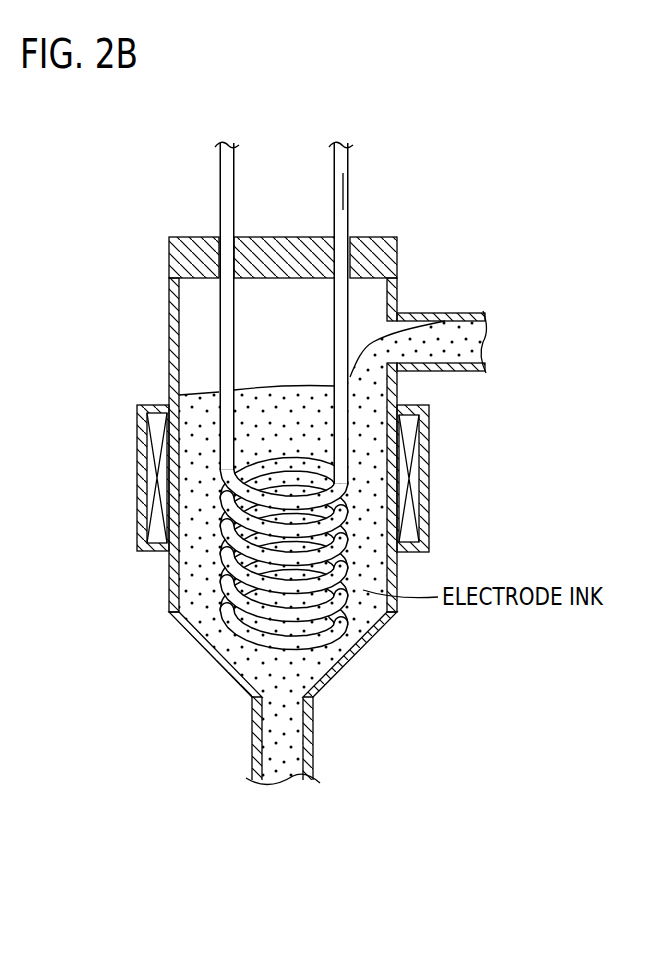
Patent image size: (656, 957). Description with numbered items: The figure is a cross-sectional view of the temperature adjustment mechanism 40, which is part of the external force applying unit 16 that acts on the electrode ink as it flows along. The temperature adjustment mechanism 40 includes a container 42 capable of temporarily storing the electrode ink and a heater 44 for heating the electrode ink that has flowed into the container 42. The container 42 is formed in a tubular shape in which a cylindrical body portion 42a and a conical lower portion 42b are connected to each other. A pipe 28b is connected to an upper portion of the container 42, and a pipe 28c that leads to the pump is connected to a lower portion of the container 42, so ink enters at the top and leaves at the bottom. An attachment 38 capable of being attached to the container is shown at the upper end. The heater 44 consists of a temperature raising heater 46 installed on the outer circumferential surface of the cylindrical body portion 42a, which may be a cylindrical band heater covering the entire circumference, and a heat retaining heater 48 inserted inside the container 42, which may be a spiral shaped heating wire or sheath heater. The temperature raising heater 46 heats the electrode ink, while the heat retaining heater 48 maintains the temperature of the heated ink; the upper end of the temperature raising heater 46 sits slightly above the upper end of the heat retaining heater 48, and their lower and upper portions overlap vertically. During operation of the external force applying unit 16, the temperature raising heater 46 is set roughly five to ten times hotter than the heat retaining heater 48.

The temperature adjustment mechanism 40 is at (101, 145).
The external force applying unit 16 is at (135, 145).
The attachment 38 is at (382, 246).
The pipe 28b is at (430, 315).
The pipe 28c is at (314, 743).
The container 42 is at (88, 575).
The cylindrical body portion 42a is at (168, 588).
The conical lower portion 42b is at (184, 637).
The heater 44 is at (300, 466).
The temperature raising heater 46 is at (430, 441).
The heat retaining heater 48 is at (197, 468).